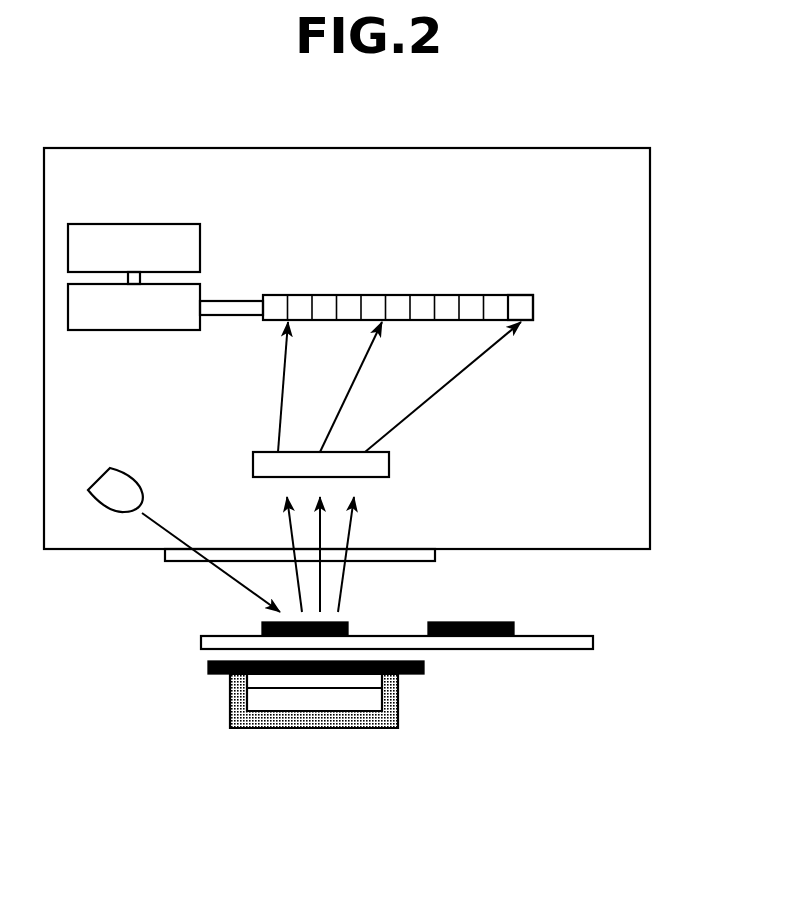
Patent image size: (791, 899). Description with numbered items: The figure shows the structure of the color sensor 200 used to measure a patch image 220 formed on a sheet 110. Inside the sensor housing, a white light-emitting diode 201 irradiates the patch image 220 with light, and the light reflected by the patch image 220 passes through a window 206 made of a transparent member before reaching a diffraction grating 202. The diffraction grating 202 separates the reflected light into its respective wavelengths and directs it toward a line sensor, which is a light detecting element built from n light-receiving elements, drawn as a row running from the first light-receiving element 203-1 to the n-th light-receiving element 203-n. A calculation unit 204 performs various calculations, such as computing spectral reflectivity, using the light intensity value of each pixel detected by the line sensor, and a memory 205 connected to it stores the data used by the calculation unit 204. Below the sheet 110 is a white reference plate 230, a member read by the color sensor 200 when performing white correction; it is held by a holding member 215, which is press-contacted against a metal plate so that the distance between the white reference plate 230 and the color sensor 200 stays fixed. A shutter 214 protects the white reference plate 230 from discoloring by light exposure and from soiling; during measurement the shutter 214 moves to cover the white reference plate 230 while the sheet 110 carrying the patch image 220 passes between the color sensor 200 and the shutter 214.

The color sensor 200 is at (142, 148).
The white light-emitting diode 201 is at (121, 472).
The diffraction grating 202 is at (389, 465).
The light-receiving element of line sensor 203-1 is at (289, 295).
The light-receiving element of line sensor 203-n is at (533, 307).
The calculation unit 204 is at (118, 332).
The memory 205 is at (124, 224).
The window 206 is at (435, 556).
The patch image 220 is at (262, 630).
The sheet 110 is at (203, 650).
The shutter 214 is at (407, 675).
The holding member 215 is at (263, 730).
The white reference plate 230 is at (355, 713).